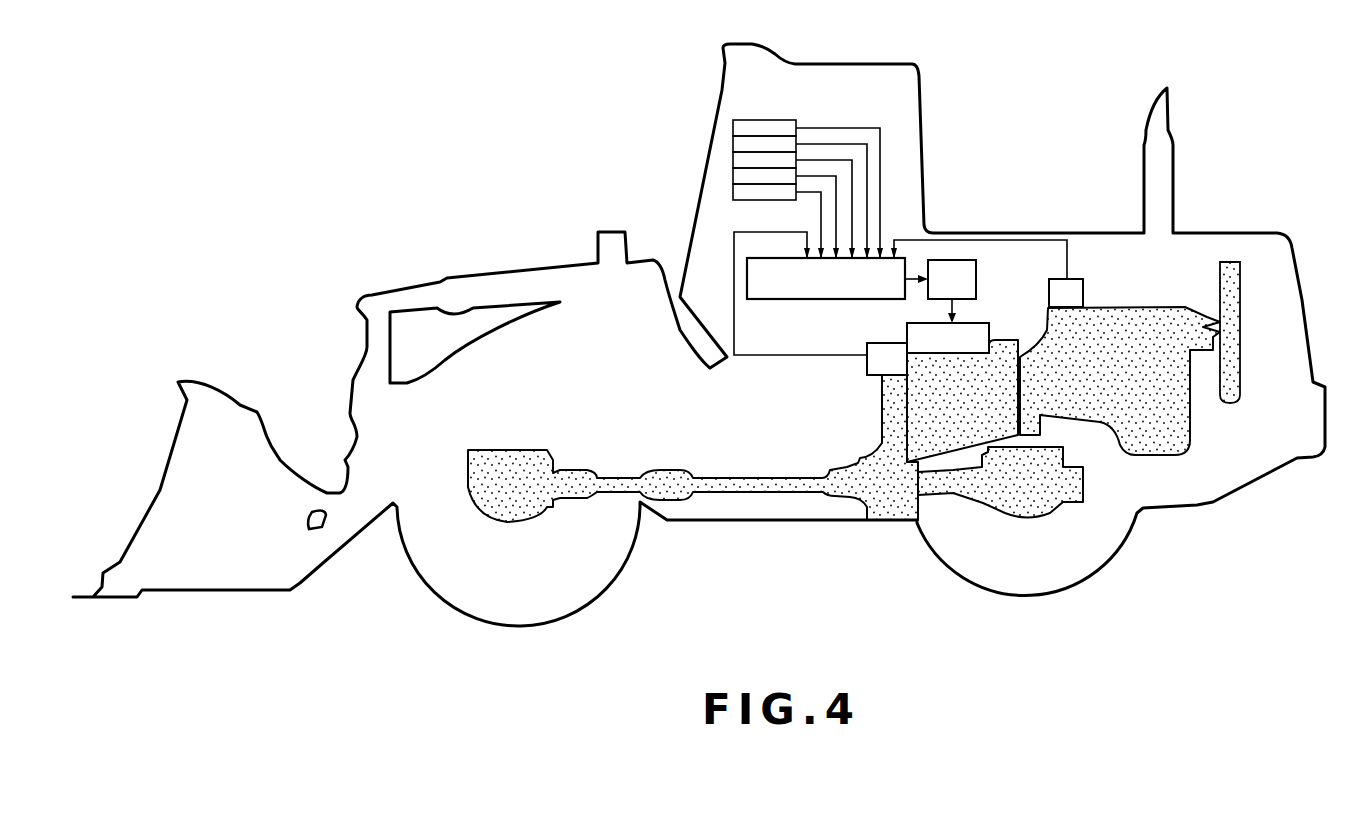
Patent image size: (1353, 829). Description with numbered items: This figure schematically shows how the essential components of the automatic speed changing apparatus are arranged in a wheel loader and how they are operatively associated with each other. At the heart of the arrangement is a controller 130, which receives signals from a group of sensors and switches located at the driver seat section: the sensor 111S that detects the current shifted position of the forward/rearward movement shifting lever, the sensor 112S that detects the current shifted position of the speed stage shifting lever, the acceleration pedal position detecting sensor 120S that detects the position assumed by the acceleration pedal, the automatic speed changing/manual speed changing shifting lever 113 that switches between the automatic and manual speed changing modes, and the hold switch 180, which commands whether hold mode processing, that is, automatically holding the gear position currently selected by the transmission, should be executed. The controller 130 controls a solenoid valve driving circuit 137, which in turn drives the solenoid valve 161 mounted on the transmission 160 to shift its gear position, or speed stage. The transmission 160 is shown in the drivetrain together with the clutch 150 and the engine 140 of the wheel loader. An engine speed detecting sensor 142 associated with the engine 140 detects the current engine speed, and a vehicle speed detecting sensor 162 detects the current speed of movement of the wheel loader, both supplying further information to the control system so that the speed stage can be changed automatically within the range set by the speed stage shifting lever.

The forward/rearward shifting lever sensor 111S is at (733, 127).
The speed stage shifting lever sensor 112S is at (734, 140).
The acceleration pedal position detecting sensor 120S is at (734, 155).
The automatic speed changing/manual speed changing shifting lever 113 is at (737, 172).
The hold switch 180 is at (737, 190).
The controller 130 is at (853, 300).
The solenoid valve driving circuit 137 is at (968, 275).
The solenoid valve 161 is at (975, 330).
The vehicle speed detecting sensor 162 is at (867, 367).
The engine speed detecting sensor 142 is at (1077, 292).
The transmission 160 is at (948, 440).
The clutch 150 is at (1003, 418).
The engine 140 is at (1167, 445).